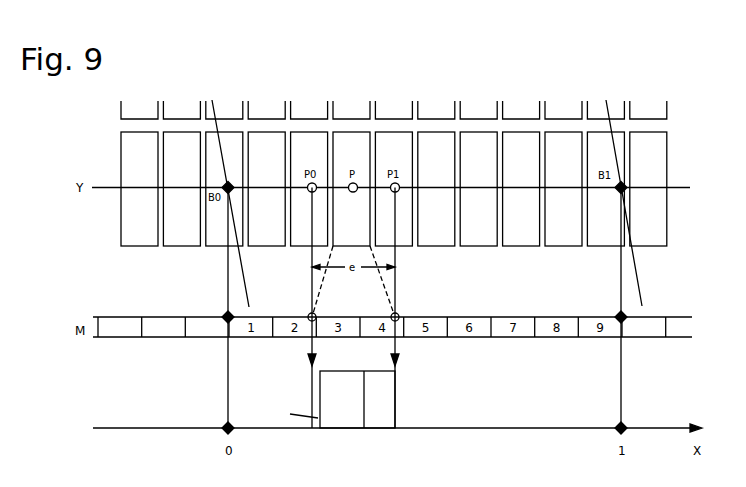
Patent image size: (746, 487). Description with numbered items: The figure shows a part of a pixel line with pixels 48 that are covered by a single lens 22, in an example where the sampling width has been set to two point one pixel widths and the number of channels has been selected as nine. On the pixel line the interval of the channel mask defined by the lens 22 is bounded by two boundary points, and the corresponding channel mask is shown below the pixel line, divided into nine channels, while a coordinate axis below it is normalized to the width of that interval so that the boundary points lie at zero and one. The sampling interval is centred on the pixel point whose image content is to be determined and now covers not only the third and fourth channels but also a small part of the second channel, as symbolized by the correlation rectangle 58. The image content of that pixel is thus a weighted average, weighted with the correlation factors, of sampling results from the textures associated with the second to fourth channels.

The pixels 48 is at (120, 227).
The lens 22 is at (637, 265).
The correlation rectangle 58 is at (398, 392).